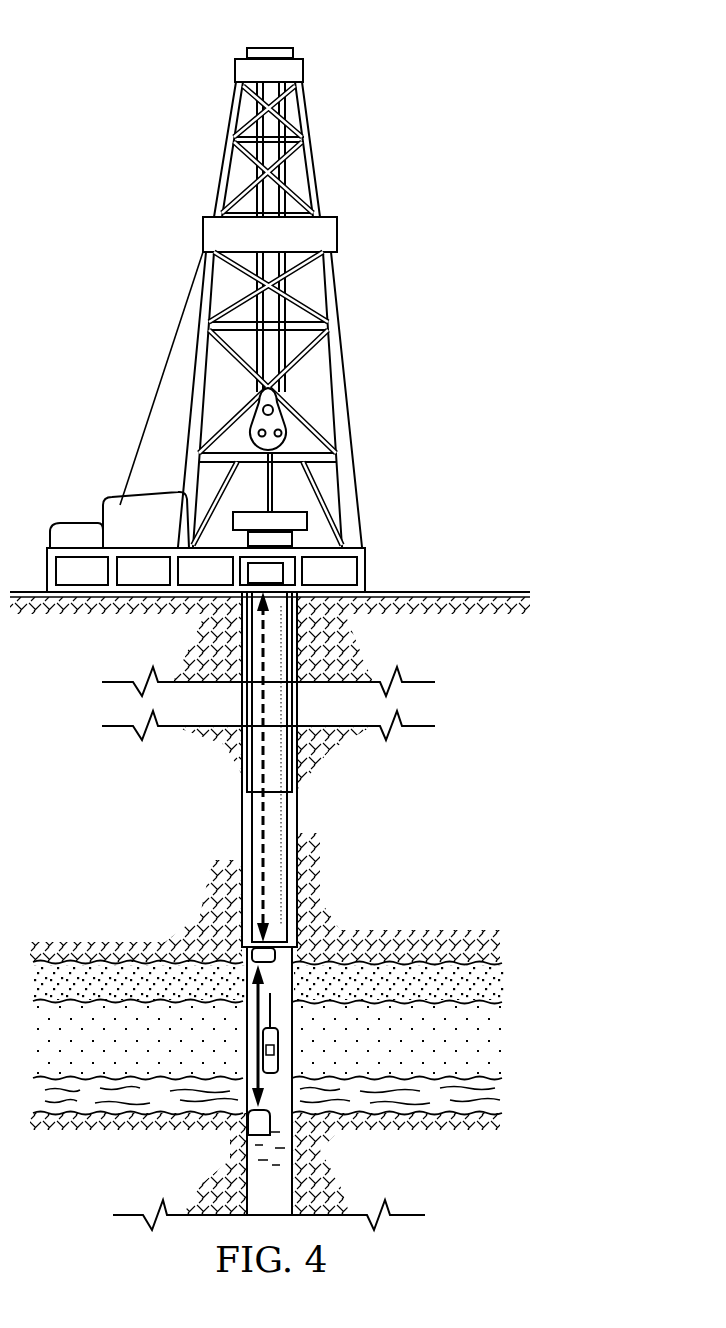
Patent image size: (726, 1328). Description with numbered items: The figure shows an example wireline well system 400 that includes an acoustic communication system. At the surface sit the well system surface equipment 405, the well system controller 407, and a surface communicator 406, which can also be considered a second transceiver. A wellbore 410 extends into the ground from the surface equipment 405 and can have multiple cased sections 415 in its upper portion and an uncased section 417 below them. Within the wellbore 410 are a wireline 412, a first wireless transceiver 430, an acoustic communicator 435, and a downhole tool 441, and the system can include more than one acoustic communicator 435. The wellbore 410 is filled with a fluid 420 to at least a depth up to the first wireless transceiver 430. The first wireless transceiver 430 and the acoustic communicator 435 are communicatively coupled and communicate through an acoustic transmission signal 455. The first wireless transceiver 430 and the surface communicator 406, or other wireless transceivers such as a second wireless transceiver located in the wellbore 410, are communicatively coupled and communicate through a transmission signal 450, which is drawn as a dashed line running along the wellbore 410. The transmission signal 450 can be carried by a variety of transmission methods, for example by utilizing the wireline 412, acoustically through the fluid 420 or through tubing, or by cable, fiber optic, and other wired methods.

The wireline well system 400 is at (114, 100).
The well system surface equipment 405 is at (342, 294).
The surface communicator 406 is at (233, 572).
The well system controller 407 is at (156, 570).
The wellbore 410 is at (308, 804).
The wireline 412 is at (270, 1007).
The cased sections 415 is at (247, 770).
The uncased section 417 is at (278, 1175).
The fluid 420 is at (284, 980).
The first wireless transceiver 430 is at (243, 958).
The acoustic communicator 435 is at (262, 1136).
The downhole tool 441 is at (279, 1047).
The transmission signal 450 is at (265, 816).
The acoustic transmission signal 455 is at (247, 1023).